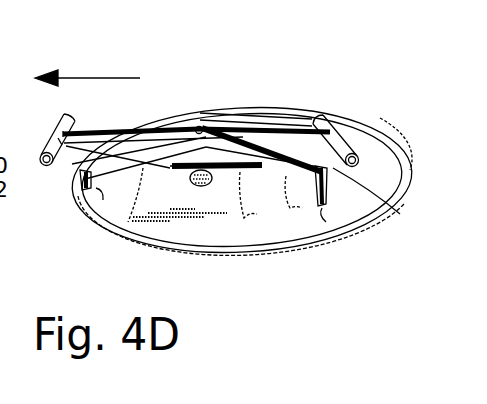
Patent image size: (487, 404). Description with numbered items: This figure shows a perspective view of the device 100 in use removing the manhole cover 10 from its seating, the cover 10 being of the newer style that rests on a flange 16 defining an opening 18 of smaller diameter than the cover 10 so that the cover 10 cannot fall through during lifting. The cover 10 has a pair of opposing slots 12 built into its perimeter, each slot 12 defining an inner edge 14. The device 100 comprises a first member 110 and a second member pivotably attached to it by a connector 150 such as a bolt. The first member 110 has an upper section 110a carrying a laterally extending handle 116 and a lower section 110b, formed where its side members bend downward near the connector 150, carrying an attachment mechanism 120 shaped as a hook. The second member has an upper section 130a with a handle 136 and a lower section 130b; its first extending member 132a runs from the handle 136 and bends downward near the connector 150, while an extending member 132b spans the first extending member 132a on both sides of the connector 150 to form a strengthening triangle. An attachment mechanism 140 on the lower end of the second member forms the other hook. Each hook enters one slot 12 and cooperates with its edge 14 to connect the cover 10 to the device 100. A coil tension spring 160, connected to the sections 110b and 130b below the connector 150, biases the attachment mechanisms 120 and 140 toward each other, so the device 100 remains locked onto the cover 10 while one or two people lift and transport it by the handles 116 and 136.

The manhole cover 10 is at (182, 257).
The slot 12 is at (343, 214).
The inner edge 14 is at (322, 212).
The flange 16 is at (397, 150).
The opening 18 is at (382, 201).
The device 100 is at (295, 52).
The first member 110 is at (106, 128).
The first section of first member 110a is at (160, 118).
The second section of first member 110b is at (302, 229).
The handle 116 is at (56, 120).
The attachment mechanism 120 is at (380, 147).
The first section of second member 130a is at (298, 118).
The second section of second member 130b is at (134, 213).
The first extending member 132a is at (222, 110).
The extending member 132b is at (260, 130).
The handle 136 is at (338, 112).
The attachment mechanism 140 is at (58, 165).
The connector 150 is at (202, 126).
The coil tension spring 160 is at (257, 249).